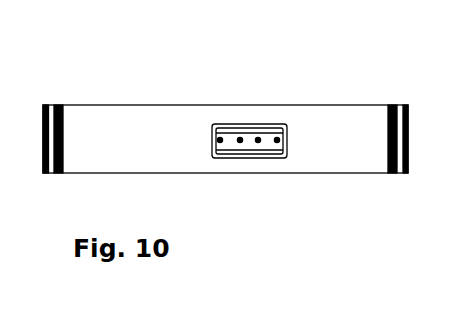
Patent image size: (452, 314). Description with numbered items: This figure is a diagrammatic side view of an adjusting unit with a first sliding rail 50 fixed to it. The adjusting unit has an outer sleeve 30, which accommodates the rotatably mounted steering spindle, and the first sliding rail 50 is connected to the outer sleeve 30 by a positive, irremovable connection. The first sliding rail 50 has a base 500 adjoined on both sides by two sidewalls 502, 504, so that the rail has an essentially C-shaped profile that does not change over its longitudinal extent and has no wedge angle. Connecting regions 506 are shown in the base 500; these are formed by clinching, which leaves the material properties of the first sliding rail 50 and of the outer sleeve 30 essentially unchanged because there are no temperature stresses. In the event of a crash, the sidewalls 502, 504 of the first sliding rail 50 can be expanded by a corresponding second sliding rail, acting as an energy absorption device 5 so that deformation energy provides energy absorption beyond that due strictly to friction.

The energy absorption device 5 is at (199, 101).
The outer sleeve 30 is at (347, 127).
The first sliding rail 50 is at (270, 118).
The base 500 is at (229, 142).
The sidewall 502 is at (277, 124).
The sidewall 504 is at (272, 157).
The connecting regions 506 is at (239, 136).